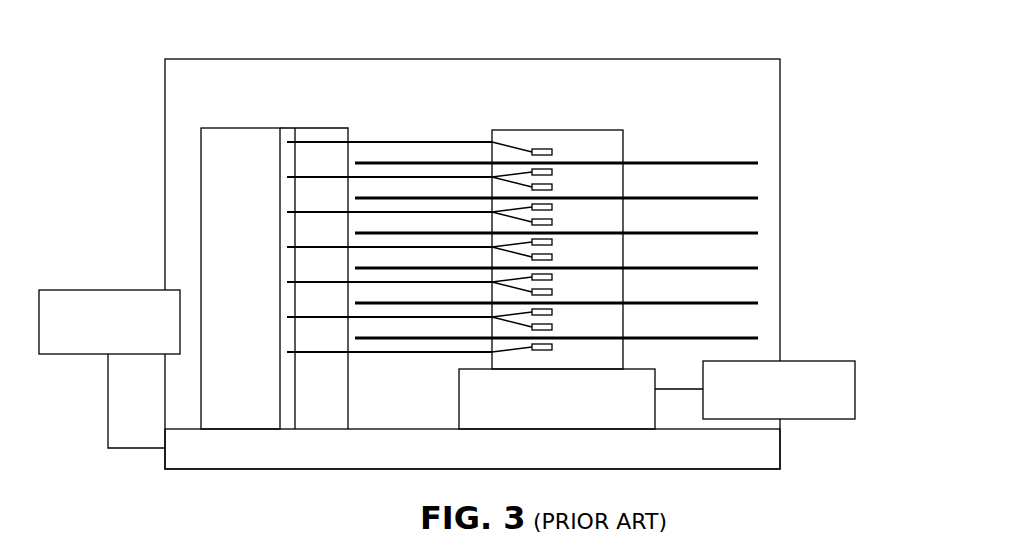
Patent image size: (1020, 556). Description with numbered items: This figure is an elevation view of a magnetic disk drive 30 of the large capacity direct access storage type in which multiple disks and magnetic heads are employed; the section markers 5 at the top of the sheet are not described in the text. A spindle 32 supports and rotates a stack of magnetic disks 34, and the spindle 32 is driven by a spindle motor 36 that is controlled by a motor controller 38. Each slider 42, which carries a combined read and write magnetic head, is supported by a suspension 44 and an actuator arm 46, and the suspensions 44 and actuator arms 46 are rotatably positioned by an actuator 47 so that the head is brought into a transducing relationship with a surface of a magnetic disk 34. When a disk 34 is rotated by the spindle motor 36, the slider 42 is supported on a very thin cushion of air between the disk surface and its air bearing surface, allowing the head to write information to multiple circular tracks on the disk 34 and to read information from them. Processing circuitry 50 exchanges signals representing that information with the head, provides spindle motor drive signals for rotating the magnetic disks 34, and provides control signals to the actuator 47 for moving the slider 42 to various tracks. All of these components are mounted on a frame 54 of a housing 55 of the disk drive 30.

The section line markers 5 is at (256, 11).
The magnetic disk drive 30 is at (670, 135).
The spindle 32 is at (612, 130).
The magnetic disk 34 is at (758, 163).
The spindle motor 36 is at (557, 399).
The motor controller 38 is at (813, 420).
The slider 42 is at (553, 172).
The suspension 44 is at (524, 174).
The actuator arm 46 is at (464, 178).
The actuator 47 is at (230, 127).
The processing circuitry 50 is at (80, 288).
The frame 54 is at (218, 465).
The housing 55 is at (692, 59).